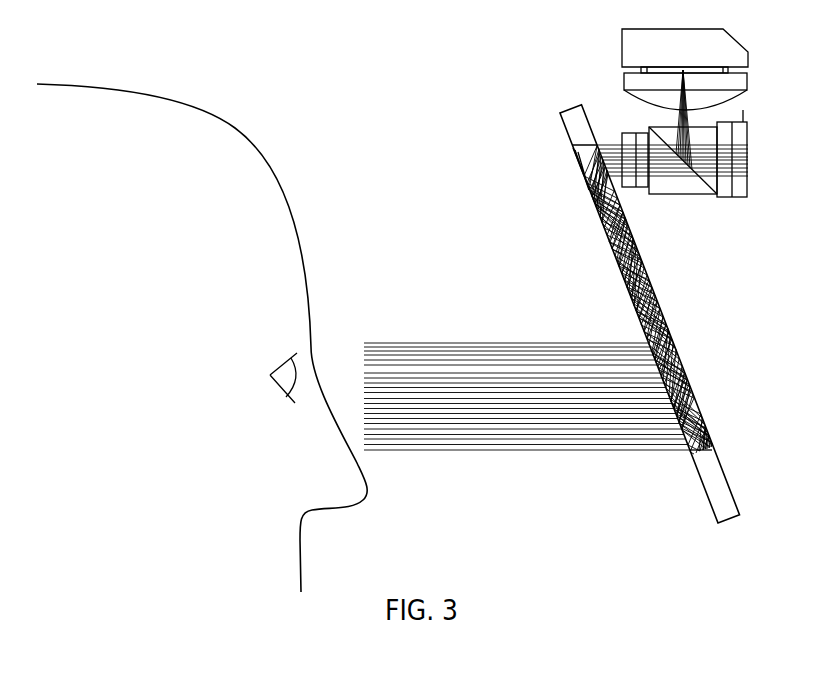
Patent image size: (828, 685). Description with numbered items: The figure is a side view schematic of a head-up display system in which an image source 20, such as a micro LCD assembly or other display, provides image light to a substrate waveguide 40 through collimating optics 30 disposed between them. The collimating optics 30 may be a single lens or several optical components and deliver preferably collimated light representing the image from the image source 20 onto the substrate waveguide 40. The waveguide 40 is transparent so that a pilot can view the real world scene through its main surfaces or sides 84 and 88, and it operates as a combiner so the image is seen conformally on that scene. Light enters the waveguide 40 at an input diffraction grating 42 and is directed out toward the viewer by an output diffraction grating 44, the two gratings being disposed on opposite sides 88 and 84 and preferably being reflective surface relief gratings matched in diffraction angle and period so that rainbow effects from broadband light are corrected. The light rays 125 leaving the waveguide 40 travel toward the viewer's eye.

The image source 20 is at (742, 83).
The collimating optics 30 is at (745, 190).
The substrate waveguide 40 is at (575, 118).
The input diffraction grating 42 is at (587, 183).
The output diffraction grating 44 is at (700, 395).
The main surface or side of waveguide 84 is at (640, 252).
The main surface or side of waveguide 88 is at (603, 226).
The out-coupled light beams toward eye 125 is at (527, 422).